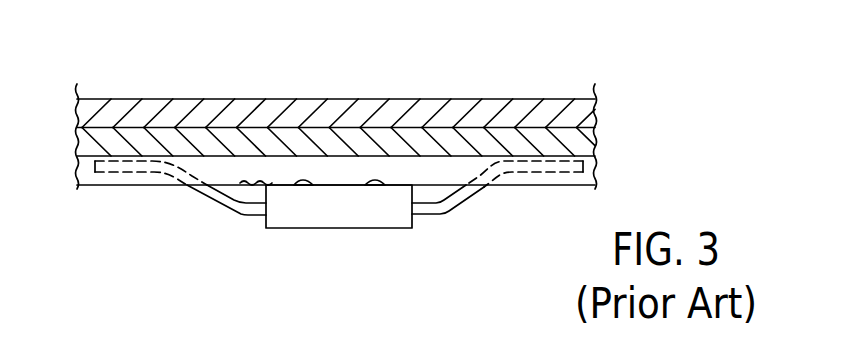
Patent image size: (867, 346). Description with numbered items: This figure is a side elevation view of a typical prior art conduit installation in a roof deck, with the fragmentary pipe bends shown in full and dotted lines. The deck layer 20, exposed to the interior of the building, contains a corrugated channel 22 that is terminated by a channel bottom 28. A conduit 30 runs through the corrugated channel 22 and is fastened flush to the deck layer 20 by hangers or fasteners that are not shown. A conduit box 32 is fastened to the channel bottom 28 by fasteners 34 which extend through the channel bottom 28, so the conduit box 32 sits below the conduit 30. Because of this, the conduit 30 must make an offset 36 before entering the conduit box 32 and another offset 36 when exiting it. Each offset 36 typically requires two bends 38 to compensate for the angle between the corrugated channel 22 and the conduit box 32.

The deck layer 20 is at (219, 155).
The corrugated channel 22 is at (256, 170).
The channel bottom 28 is at (115, 187).
The conduit 30 is at (553, 166).
The conduit box 32 is at (278, 222).
The fasteners 34 is at (312, 184).
The offset 36 is at (229, 224).
The bends 38 is at (467, 197).